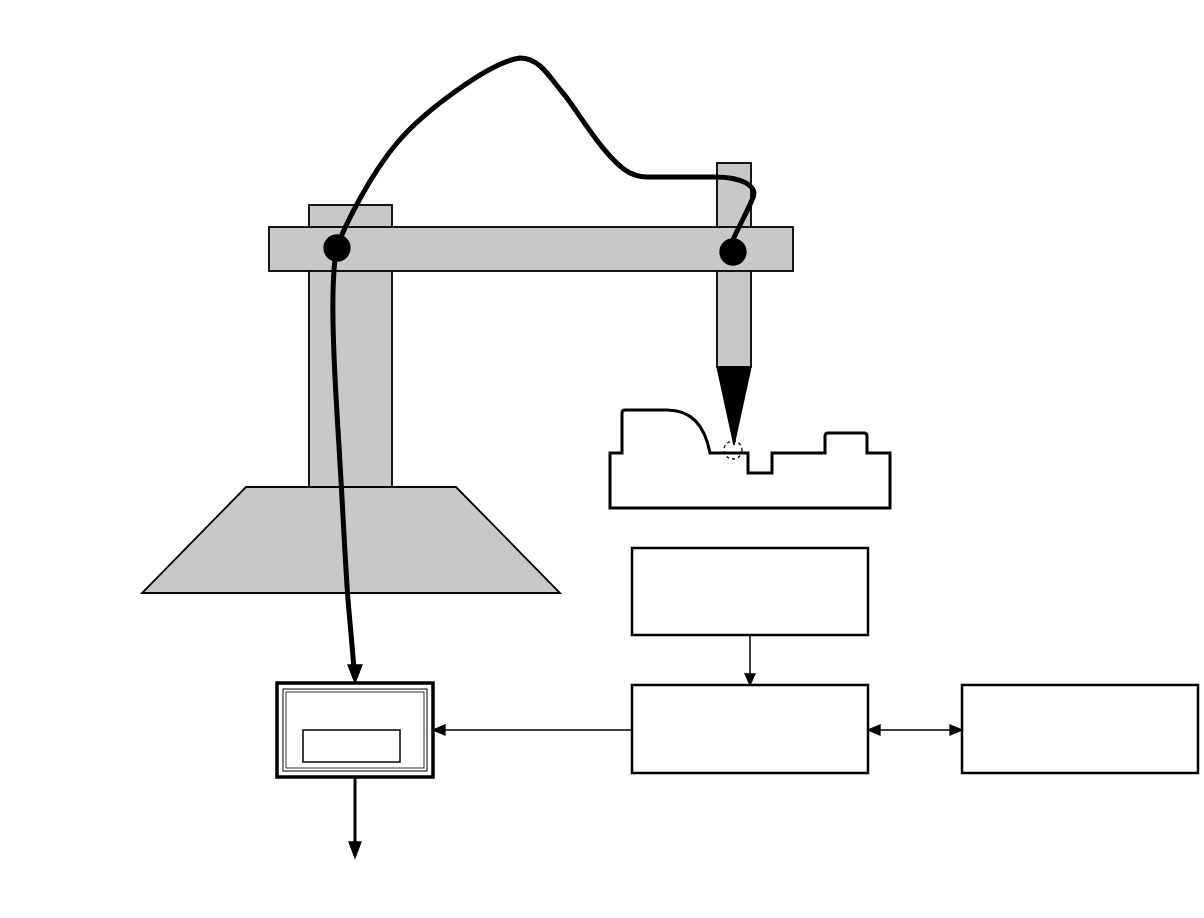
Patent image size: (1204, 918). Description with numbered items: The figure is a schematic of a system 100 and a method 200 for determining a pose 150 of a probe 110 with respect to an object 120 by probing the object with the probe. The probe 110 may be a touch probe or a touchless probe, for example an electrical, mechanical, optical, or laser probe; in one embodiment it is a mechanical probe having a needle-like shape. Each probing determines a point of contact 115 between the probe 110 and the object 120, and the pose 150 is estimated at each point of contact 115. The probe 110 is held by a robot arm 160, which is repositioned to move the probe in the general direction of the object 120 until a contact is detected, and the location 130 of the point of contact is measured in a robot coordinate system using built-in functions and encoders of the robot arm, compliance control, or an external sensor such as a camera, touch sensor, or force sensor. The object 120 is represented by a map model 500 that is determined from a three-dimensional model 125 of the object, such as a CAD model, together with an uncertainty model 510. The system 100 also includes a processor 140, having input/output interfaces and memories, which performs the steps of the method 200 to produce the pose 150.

The system 100 is at (706, 880).
The probe 110 is at (745, 396).
The point of contact 115 is at (742, 445).
The object 120 is at (890, 488).
The three-dimensional model 125 is at (868, 580).
The location 130 is at (560, 82).
The processor 140 is at (277, 722).
The pose 150 is at (353, 817).
The robot arm 160 is at (740, 163).
The method 200 is at (388, 762).
The map model 500 is at (838, 773).
The uncertainty model 510 is at (1075, 685).